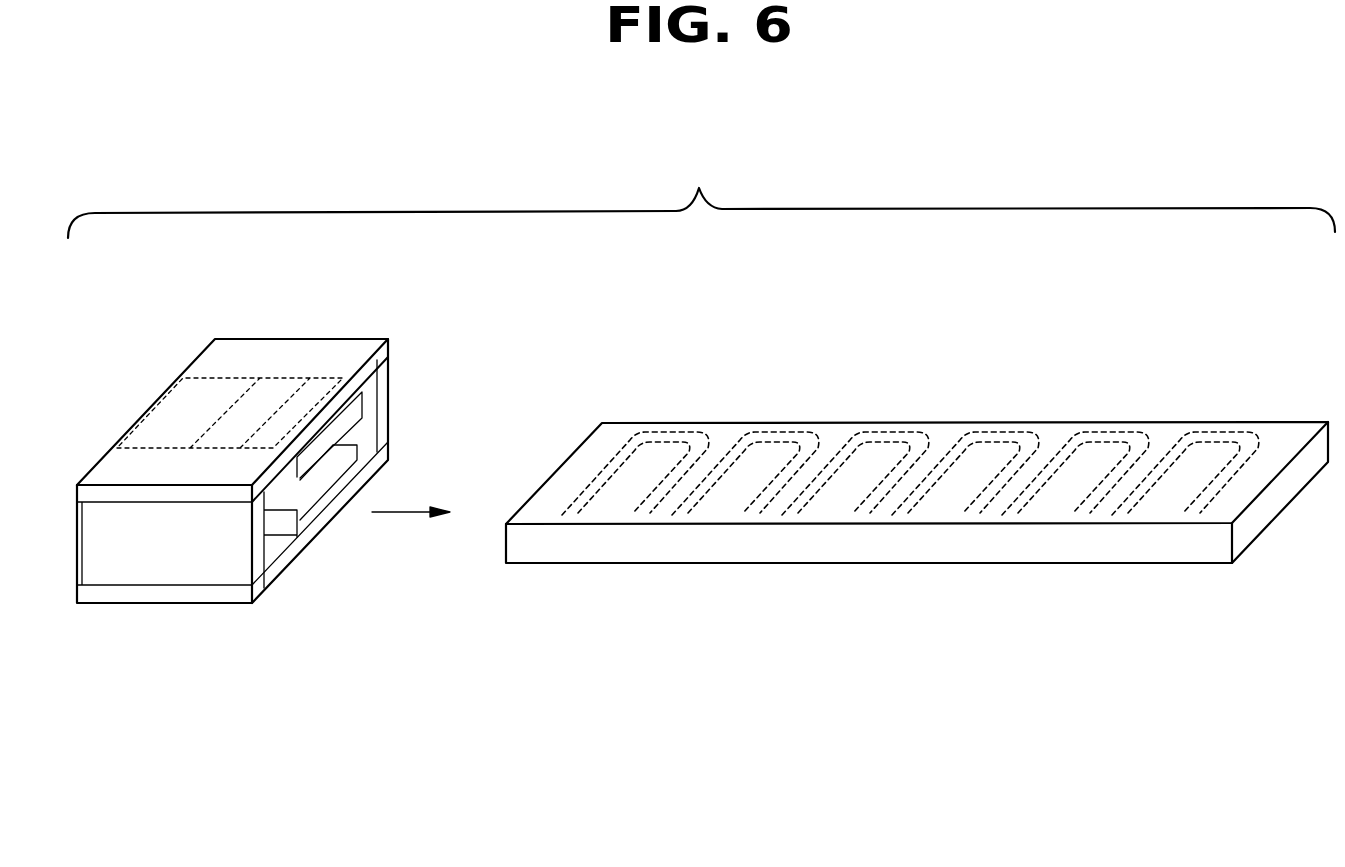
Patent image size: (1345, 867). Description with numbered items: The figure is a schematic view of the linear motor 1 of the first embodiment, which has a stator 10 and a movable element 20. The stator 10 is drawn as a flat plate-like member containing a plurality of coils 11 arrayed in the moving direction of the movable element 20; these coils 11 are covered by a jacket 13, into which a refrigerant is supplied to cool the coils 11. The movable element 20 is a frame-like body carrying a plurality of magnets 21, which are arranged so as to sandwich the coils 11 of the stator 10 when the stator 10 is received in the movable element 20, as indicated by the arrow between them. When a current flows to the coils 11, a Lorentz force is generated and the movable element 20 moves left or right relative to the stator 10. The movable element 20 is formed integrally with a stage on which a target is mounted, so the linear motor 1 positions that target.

The linear motor 1 is at (701, 193).
The stator 10 is at (875, 567).
The coils 11 is at (788, 420).
The jacket 13 is at (1112, 552).
The movable element 20 is at (170, 615).
The magnets 21 is at (277, 377).